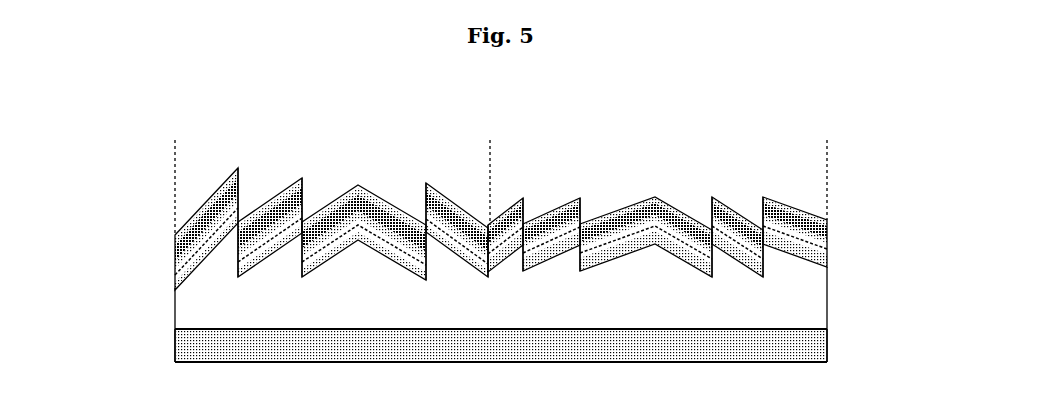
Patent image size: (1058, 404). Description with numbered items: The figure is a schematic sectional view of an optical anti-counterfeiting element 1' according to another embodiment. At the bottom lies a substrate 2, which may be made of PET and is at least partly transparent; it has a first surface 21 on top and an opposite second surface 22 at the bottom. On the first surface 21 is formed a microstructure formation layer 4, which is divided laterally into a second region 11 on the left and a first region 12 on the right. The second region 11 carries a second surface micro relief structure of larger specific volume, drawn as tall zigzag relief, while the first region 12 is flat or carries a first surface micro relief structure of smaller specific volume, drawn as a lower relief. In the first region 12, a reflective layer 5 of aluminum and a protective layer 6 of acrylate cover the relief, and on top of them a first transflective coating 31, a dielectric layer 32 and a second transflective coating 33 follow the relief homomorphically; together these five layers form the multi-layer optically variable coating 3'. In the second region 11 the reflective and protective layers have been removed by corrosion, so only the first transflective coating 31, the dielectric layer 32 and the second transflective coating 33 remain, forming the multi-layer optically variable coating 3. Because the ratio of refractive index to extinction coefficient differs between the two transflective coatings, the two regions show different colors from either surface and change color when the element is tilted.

The optical anti-counterfeiting element 1' is at (543, 187).
The second region 11 is at (490, 140).
The first region 12 is at (827, 140).
The substrate 2 is at (542, 345).
The first surface 21 is at (801, 328).
The second surface 22 is at (804, 365).
The multi-layer optically variable coating 3 is at (275, 245).
The first transflective coating 31 is at (173, 273).
The dielectric layer 32 is at (173, 257).
The second transflective coating 33 is at (173, 238).
The multi-layer optically variable coating 3' is at (715, 241).
The microstructure formation layer 4 is at (794, 292).
The reflective layer 5 is at (826, 272).
The protective layer 6 is at (829, 255).